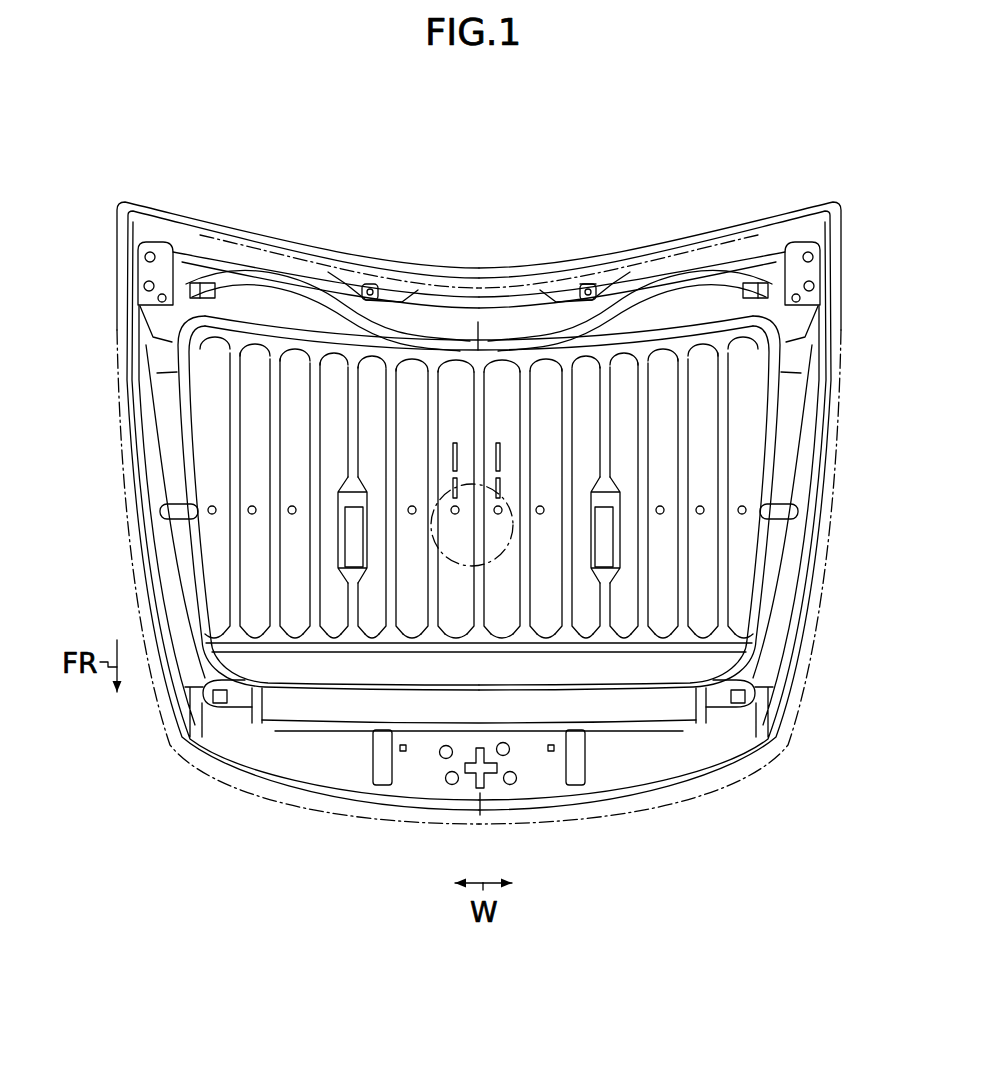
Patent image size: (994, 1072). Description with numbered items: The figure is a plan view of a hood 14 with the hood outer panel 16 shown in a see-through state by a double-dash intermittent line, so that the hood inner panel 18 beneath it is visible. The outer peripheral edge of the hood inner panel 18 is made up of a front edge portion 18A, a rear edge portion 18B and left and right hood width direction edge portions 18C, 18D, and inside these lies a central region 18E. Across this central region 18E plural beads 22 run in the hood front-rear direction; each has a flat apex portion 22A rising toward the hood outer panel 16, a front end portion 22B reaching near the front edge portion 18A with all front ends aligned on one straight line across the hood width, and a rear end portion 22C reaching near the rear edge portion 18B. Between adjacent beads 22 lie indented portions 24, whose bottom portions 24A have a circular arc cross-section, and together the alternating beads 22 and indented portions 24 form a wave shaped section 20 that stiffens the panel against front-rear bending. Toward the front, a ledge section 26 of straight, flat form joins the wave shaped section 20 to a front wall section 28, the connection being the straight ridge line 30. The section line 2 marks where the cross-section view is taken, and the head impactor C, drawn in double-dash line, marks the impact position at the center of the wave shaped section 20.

The hood 14 is at (188, 812).
The hood outer panel 16 is at (168, 737).
The hood inner panel 18 is at (175, 678).
The front edge portion 18A is at (323, 763).
The rear edge portion 18B is at (655, 312).
The hood width direction edge portion 18C is at (795, 413).
The hood width direction edge portion 18D is at (163, 432).
The central region 18E is at (705, 556).
The wave shaped section 20 is at (700, 585).
The beads 22 is at (418, 600).
The apex portions 22A is at (437, 386).
The front end portion 22B is at (523, 635).
The rear end portion 22C is at (545, 322).
The indented portions 24 is at (333, 602).
The bottom portion 24A is at (337, 387).
The ledge section 26 is at (487, 643).
The front wall section 28 is at (415, 663).
The ridge line 30 is at (508, 655).
The line 2- 2 is at (478, 323).
The head impactor C is at (518, 488).